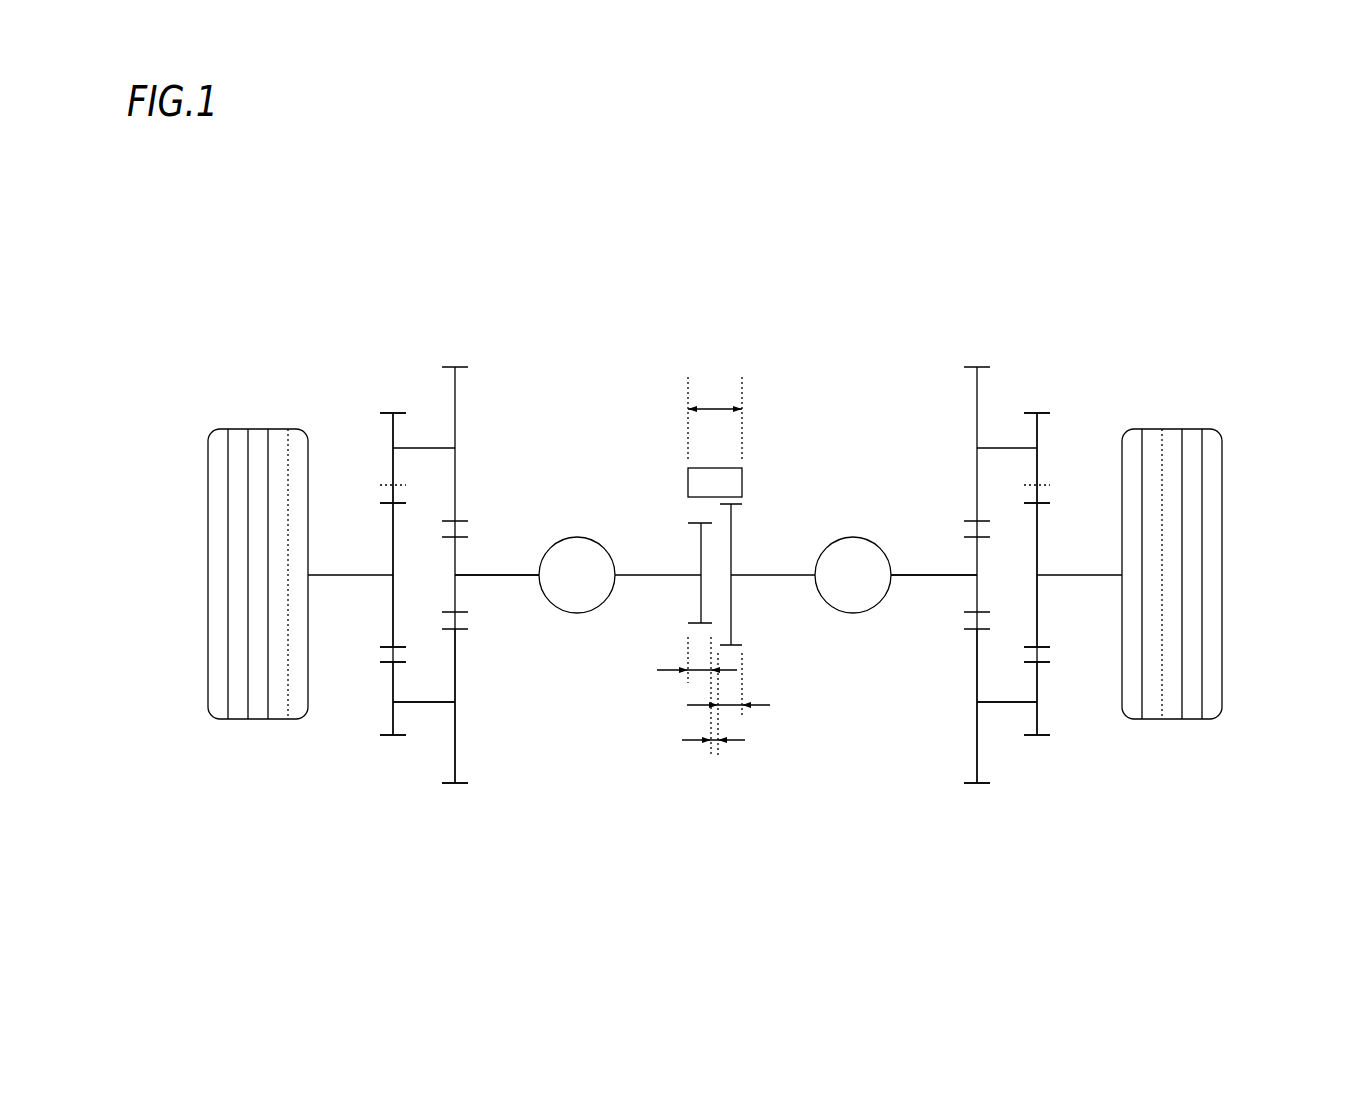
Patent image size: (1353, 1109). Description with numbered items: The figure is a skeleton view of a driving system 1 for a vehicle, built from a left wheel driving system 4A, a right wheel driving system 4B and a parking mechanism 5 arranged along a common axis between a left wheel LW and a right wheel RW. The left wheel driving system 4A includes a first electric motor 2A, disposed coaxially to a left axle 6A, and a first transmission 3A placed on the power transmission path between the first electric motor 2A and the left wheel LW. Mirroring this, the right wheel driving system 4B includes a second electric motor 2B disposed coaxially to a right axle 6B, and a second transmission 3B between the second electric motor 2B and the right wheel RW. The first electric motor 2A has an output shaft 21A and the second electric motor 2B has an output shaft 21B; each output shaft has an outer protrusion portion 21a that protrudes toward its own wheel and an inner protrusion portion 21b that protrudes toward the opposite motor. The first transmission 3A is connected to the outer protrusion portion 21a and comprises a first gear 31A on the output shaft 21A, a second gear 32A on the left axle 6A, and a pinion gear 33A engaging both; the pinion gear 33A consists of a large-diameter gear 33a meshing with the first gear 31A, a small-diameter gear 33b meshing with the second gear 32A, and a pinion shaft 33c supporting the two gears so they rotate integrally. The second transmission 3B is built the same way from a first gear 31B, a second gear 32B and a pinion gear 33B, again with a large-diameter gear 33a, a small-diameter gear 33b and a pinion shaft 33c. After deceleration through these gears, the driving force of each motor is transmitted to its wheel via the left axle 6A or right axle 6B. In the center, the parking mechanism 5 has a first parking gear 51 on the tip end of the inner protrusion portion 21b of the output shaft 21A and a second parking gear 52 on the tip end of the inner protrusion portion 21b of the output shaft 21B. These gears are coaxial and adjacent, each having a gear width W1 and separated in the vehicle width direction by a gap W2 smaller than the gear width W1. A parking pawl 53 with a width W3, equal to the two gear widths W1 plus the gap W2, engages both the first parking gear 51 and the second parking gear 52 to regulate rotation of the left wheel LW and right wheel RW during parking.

The driving system 1 is at (1015, 200).
The left wheel LW is at (208, 553).
The right wheel RW is at (1223, 500).
The first electric motor 2A is at (577, 537).
The second electric motor 2B is at (853, 537).
The first transmission 3A is at (392, 362).
The second transmission 3B is at (1055, 377).
The left wheel driving system 4A is at (523, 357).
The right wheel driving system 4B is at (878, 348).
The parking mechanism 5 is at (667, 616).
The left axle 6A is at (340, 575).
The right axle 6B is at (1087, 575).
The output shaft 21A is at (498, 575).
The output shaft 21B is at (923, 575).
The outer protrusion portion 21a is at (716, 529).
The inner protrusion portion 21b is at (650, 578).
The first gear 31A is at (458, 593).
The first gear 31B is at (972, 593).
The second gear 32A is at (392, 608).
The second gear 32B is at (1038, 608).
The pinion gear 33A is at (243, 798).
The pinion gear 33B is at (1191, 798).
The large-diameter gear 33a is at (448, 784).
The small-diameter gear 33b is at (391, 737).
The pinion shaft 33c is at (428, 704).
The first parking gear 51 is at (700, 555).
The second parking gear 52 is at (731, 550).
The parking pawl 53 is at (742, 480).
The gear width W1 is at (700, 672).
The gap W2 is at (712, 755).
The width W3 is at (715, 419).